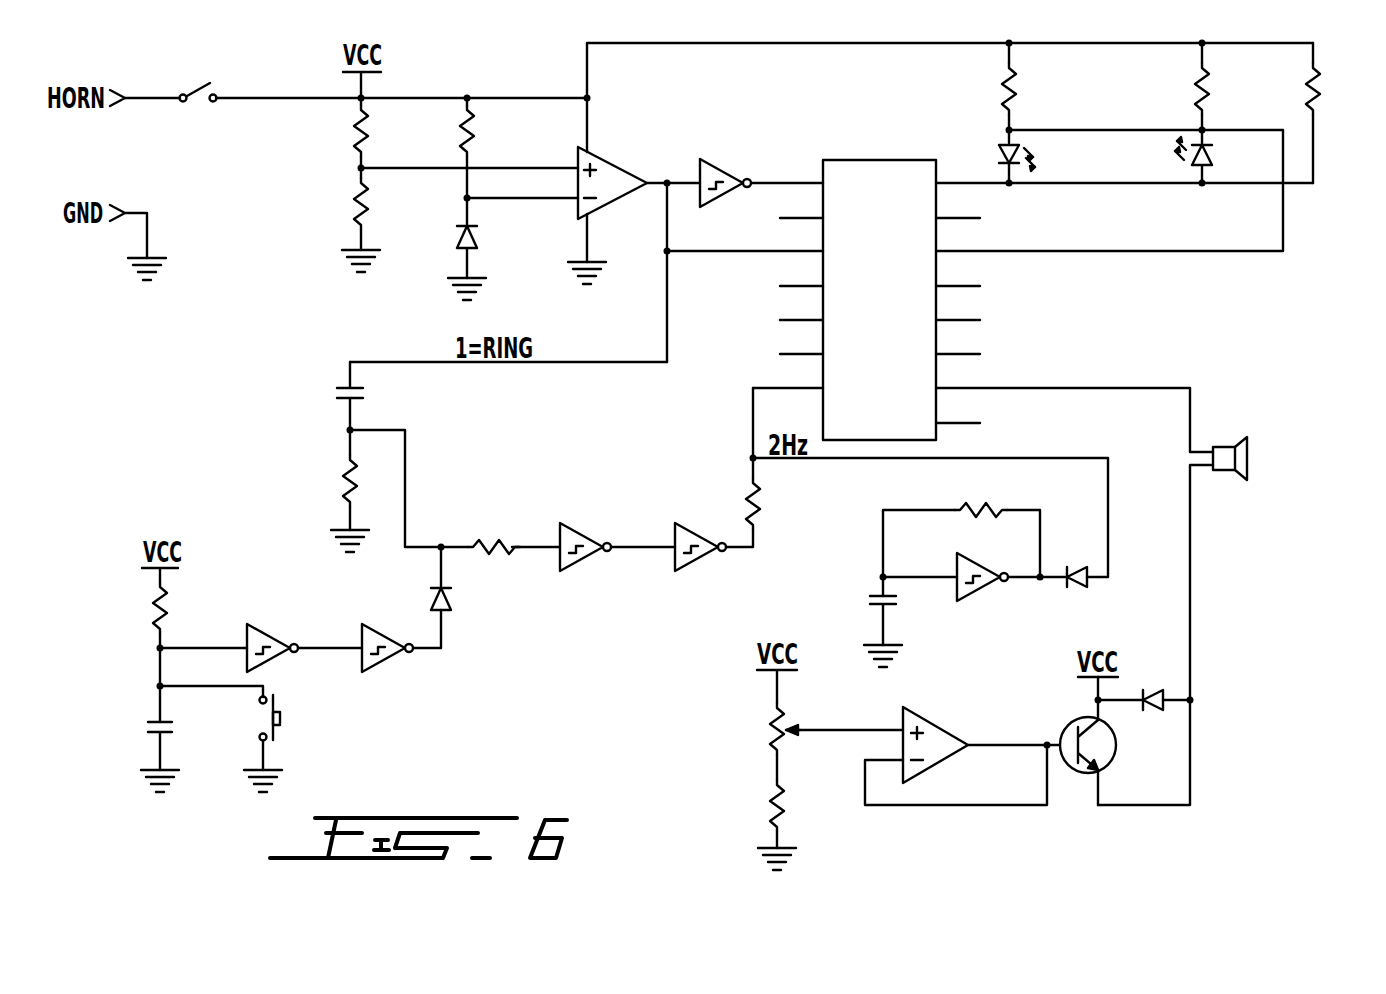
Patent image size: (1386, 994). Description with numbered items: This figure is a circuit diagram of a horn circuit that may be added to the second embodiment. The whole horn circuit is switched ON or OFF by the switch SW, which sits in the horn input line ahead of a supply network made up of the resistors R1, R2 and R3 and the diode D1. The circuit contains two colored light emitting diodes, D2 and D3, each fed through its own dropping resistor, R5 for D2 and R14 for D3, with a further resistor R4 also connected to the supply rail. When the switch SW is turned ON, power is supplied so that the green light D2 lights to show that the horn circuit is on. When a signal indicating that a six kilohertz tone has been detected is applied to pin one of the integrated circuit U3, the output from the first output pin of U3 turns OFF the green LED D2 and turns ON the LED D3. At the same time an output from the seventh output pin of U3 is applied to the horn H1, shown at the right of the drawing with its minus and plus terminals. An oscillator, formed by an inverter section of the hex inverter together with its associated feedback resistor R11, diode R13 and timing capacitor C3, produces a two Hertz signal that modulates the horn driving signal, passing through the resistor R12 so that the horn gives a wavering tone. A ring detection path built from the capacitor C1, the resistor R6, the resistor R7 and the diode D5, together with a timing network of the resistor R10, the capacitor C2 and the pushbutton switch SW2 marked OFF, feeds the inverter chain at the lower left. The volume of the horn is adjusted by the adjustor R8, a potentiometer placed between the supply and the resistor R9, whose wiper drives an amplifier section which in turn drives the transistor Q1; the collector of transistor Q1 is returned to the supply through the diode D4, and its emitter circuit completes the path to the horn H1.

The switch SW is at (198, 126).
The resistor R1 is at (377, 141).
The resistor R2 is at (372, 225).
The resistor R3 is at (484, 162).
The diode D1 is at (480, 260).
The integrated circuit U3 is at (886, 282).
The resistor R5 is at (1030, 93).
The green light LED D2 is at (1038, 160).
The resistor R14 is at (1226, 94).
The LED D3 is at (1212, 160).
The resistor R4 is at (1330, 113).
The horn H1 is at (1239, 463).
The resistor R12 is at (778, 504).
The resistor R11 is at (981, 492).
The diode R13 is at (1076, 560).
The capacitor C3 is at (897, 616).
The resistor R7 is at (494, 531).
The capacitor C1 is at (360, 396).
The resistor R6 is at (361, 491).
The diode D5 is at (460, 600).
The resistor R10 is at (181, 652).
The capacitor C2 is at (173, 742).
The off pushbutton switch SW2 is at (286, 741).
The adjustor R8 is at (764, 741).
The resistor R9 is at (788, 825).
The transistor Q1 is at (1106, 745).
The diode D4 is at (1150, 684).